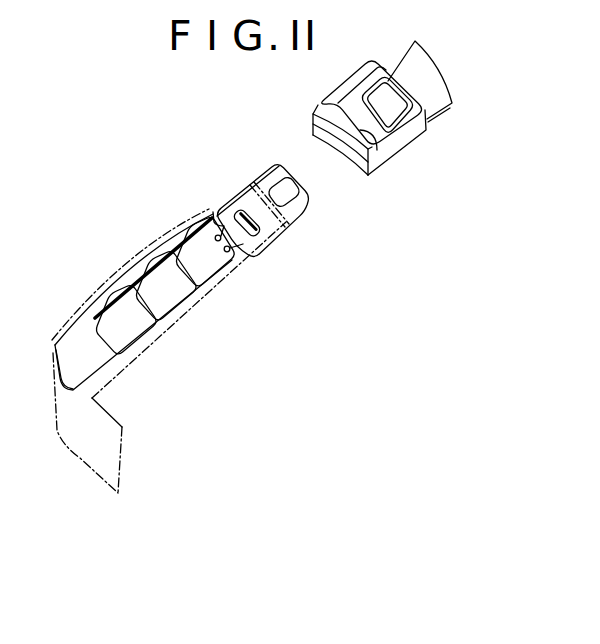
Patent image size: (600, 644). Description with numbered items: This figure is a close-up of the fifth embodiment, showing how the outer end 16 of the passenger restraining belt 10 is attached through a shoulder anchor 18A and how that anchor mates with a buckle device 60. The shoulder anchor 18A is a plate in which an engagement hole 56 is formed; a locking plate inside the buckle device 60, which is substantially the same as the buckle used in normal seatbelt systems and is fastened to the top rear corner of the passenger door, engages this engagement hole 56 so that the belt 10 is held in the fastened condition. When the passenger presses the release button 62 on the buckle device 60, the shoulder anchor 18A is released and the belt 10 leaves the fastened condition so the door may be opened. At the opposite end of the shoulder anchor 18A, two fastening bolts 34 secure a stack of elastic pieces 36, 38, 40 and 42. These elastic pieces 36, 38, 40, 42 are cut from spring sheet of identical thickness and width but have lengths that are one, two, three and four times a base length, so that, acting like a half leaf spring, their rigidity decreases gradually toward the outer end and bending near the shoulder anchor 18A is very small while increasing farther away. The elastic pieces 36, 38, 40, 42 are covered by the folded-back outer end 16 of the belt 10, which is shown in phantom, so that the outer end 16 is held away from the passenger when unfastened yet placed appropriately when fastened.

The passenger restraining belt 10 is at (112, 442).
The outer end 16 is at (199, 304).
The shoulder anchor 18A is at (274, 220).
The fastening bolts 34 is at (214, 211).
The elastic piece 36 is at (190, 251).
The elastic piece 38 is at (152, 274).
The elastic piece 40 is at (110, 298).
The elastic piece 42 is at (83, 350).
The engagement hole 56 is at (296, 184).
The buckle device 60 is at (374, 133).
The release button 62 is at (386, 100).